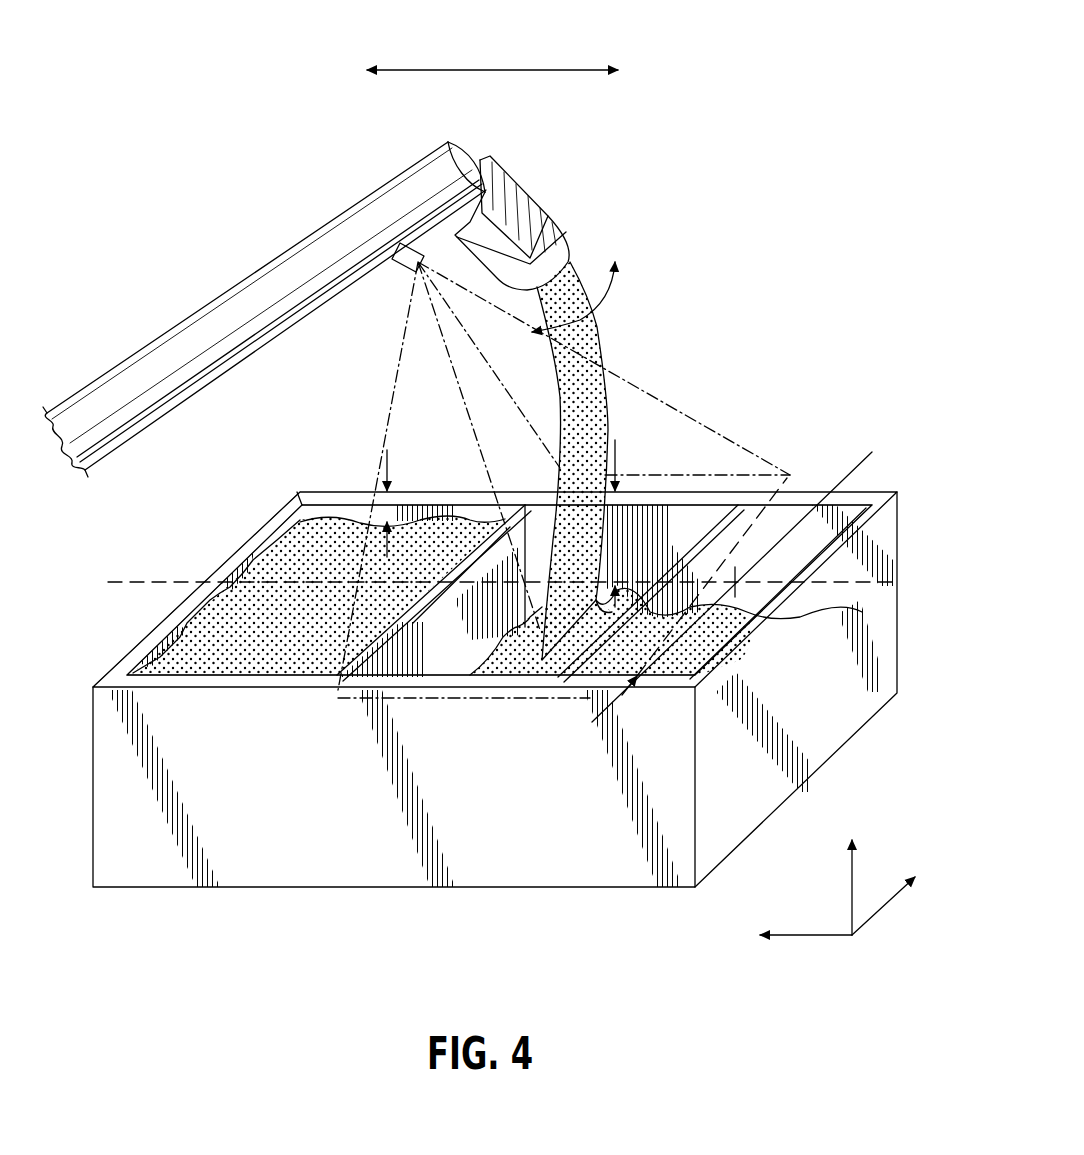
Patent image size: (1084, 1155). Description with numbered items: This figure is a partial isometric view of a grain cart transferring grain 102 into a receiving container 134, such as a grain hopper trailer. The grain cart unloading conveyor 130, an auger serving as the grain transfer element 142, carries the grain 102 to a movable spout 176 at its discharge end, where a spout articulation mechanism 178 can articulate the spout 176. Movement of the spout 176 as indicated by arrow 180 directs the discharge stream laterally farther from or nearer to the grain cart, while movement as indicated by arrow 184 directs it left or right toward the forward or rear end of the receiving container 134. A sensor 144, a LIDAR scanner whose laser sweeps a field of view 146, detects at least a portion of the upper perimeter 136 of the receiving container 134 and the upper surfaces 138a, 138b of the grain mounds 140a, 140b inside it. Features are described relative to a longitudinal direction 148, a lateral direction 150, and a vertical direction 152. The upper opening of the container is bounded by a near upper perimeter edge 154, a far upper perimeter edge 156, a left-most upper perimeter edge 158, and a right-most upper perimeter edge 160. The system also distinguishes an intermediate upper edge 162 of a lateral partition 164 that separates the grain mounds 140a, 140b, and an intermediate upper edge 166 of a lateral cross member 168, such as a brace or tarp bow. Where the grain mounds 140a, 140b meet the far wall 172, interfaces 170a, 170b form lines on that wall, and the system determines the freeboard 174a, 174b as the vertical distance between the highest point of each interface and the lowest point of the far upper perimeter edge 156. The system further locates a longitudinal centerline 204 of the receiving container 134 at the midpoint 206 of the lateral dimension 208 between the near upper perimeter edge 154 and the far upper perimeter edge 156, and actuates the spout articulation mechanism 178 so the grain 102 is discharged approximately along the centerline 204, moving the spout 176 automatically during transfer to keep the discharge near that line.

The grain 102 is at (590, 326).
The grain cart unloading conveyor 130 is at (175, 328).
The receiving container 134 is at (828, 752).
The upper perimeter 136 is at (211, 567).
The upper surface 138a is at (200, 632).
The upper surface 138b is at (732, 627).
The grain mound 140a is at (262, 576).
The grain mound 140b is at (695, 658).
The grain transfer element 142 is at (296, 242).
The sensor 144 is at (400, 266).
The field of view 146 is at (390, 700).
The longitudinal direction 148 is at (835, 932).
The lateral direction 150 is at (878, 912).
The vertical direction 152 is at (855, 890).
The near upper perimeter edge 154 is at (158, 680).
The far upper perimeter edge 156 is at (298, 491).
The left-most upper perimeter edge 158 is at (258, 530).
The right-most upper perimeter edge 160 is at (730, 650).
The intermediate upper edge 162 is at (350, 672).
The lateral partition 164 is at (405, 658).
The intermediate upper edge 166 is at (558, 655).
The lateral cross member 168 is at (622, 583).
The interface 170a is at (460, 519).
The interface 170b is at (623, 577).
The far wall 172 is at (818, 497).
The freeboard 174a is at (380, 510).
The freeboard 174b is at (617, 553).
The movable spout 176 is at (553, 216).
The spout articulation mechanism 178 is at (463, 150).
The arrow 180 is at (607, 294).
The arrow 184 is at (497, 68).
The longitudinal centerline 204 is at (906, 581).
The midpoint 206 is at (740, 588).
The lateral dimension 208 is at (626, 707).